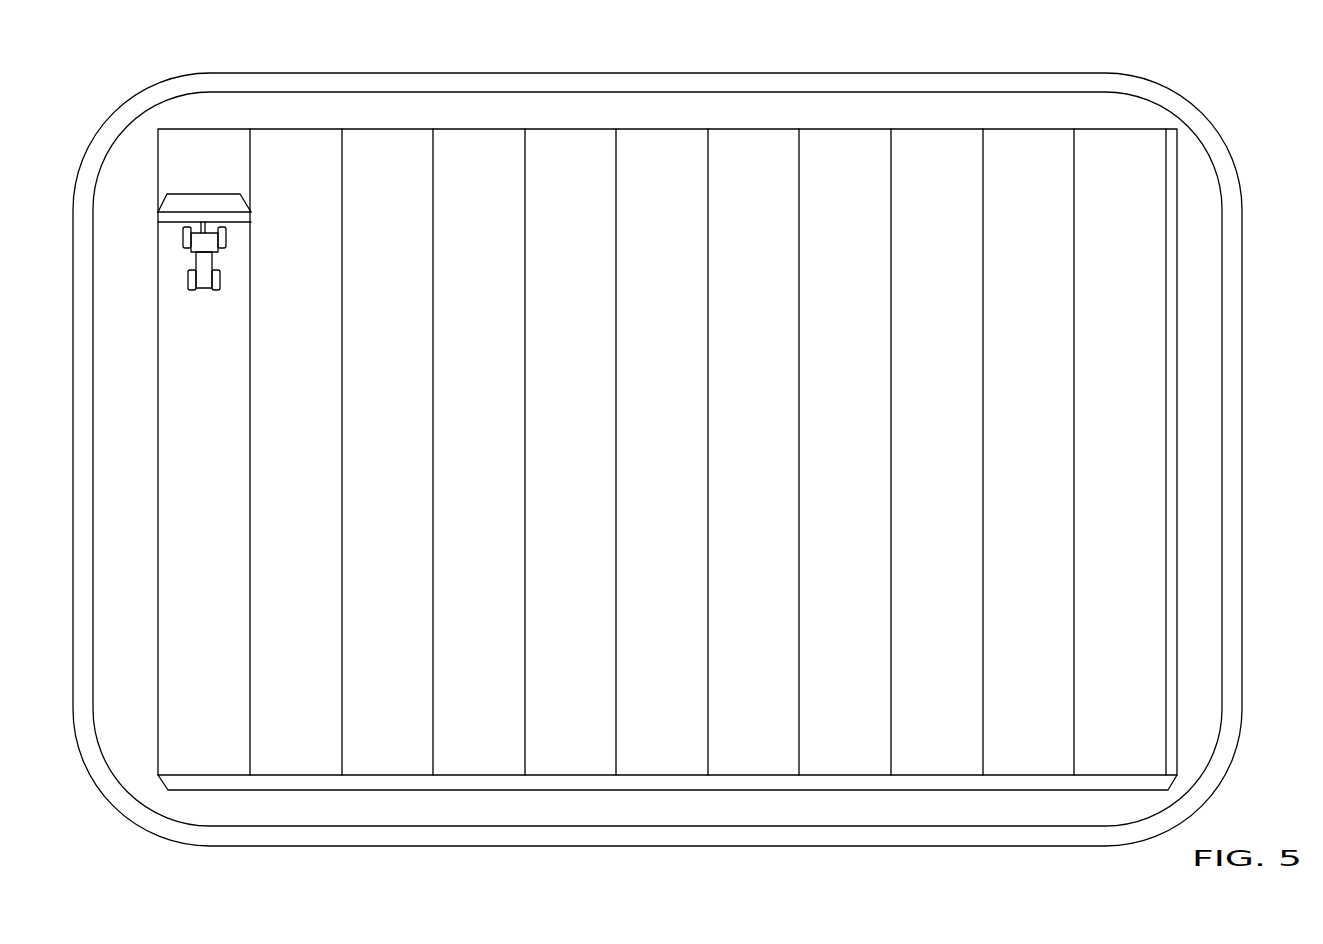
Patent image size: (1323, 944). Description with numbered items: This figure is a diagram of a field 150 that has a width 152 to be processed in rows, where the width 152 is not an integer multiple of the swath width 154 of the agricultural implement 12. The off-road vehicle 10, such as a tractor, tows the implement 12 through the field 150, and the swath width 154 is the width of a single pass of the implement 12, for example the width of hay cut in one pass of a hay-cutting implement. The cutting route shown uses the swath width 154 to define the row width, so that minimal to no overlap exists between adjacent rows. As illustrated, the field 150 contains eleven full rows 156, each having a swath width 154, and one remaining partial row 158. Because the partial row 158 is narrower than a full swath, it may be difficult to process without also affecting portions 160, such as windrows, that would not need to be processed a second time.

The off-road vehicle 10 is at (225, 257).
The agricultural implement 12 is at (236, 189).
The field 150 is at (158, 840).
The width 152 is at (660, 790).
The swath width 154 is at (195, 194).
The full rows 156 is at (275, 142).
The partial row 158 is at (1173, 140).
The portions 160 is at (587, 826).